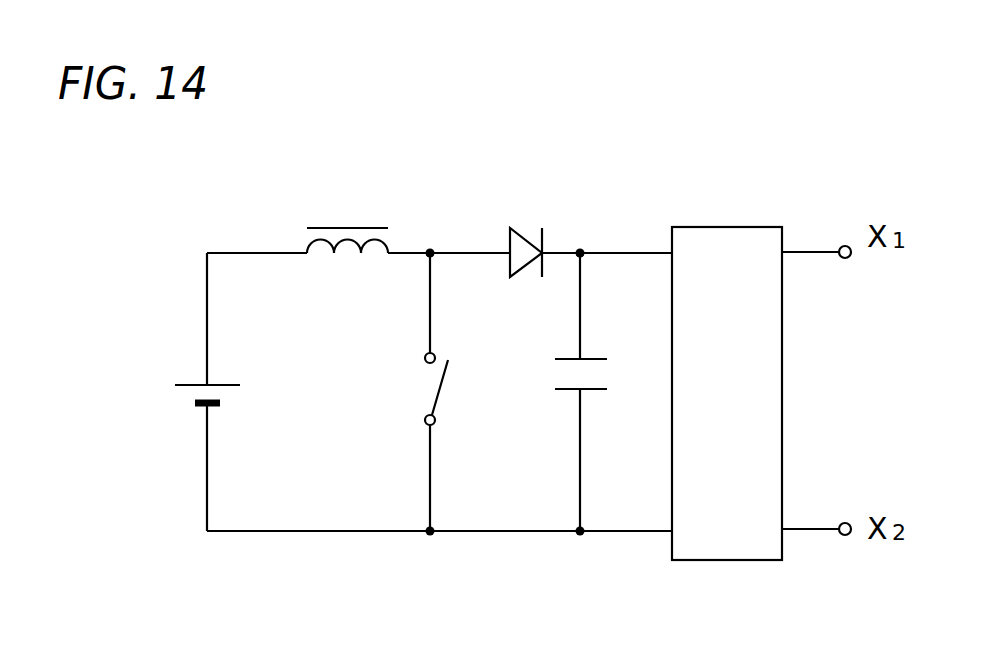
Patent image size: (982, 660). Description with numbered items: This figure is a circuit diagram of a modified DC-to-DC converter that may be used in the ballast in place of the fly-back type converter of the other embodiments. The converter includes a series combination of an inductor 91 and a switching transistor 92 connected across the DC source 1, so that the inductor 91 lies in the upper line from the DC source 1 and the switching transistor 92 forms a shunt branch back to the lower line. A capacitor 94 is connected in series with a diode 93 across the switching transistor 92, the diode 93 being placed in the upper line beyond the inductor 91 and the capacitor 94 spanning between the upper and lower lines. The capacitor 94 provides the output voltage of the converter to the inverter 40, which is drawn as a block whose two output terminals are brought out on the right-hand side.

The DC source 1 is at (177, 395).
The inductor 91 is at (345, 263).
The switching transistor 92 is at (412, 383).
The diode 93 is at (528, 223).
The capacitor 94 is at (545, 378).
The inverter 40 is at (722, 225).